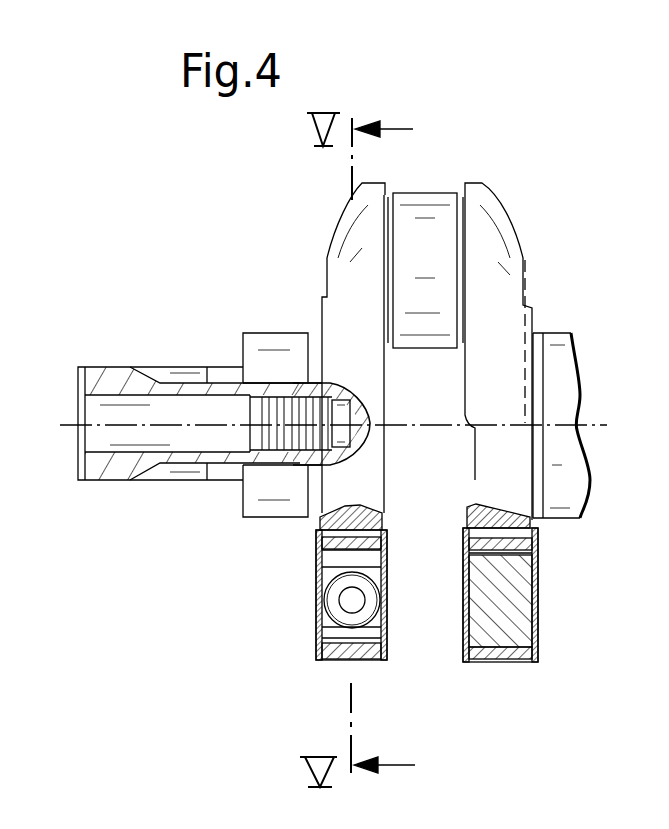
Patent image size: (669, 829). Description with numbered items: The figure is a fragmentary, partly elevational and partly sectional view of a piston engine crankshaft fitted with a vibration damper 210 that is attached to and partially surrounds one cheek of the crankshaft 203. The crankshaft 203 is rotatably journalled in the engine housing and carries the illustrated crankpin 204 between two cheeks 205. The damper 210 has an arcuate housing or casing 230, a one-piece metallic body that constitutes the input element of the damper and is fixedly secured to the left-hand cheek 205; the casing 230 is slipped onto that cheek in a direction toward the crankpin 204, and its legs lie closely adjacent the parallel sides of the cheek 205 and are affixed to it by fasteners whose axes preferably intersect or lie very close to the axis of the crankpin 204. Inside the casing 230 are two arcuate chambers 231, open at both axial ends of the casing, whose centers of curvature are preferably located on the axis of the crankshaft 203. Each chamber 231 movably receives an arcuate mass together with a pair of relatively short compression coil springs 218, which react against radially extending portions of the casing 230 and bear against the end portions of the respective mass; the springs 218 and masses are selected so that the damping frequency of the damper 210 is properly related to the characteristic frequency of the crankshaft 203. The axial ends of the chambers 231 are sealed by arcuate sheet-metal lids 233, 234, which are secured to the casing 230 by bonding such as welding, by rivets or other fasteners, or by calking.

The crankshaft 203 is at (570, 462).
The crankpin 204 is at (437, 210).
The cheek 205 is at (333, 490).
The damper 210 is at (313, 639).
The coil springs 218 is at (328, 605).
The casing 230 is at (313, 639).
The arcuate chambers 231 is at (330, 578).
The lid 233 is at (317, 628).
The lid 234 is at (387, 640).